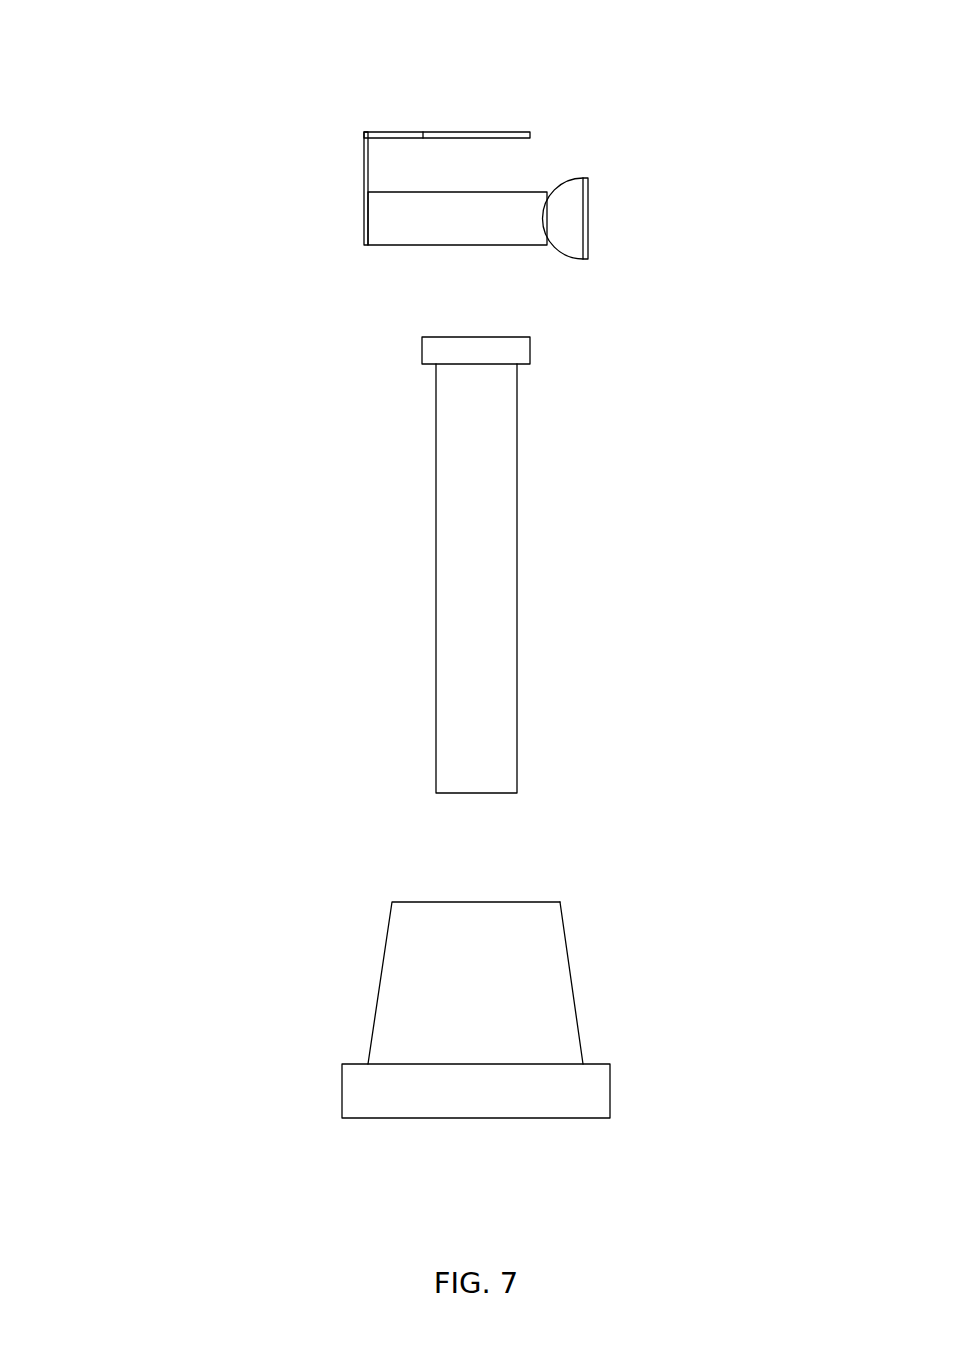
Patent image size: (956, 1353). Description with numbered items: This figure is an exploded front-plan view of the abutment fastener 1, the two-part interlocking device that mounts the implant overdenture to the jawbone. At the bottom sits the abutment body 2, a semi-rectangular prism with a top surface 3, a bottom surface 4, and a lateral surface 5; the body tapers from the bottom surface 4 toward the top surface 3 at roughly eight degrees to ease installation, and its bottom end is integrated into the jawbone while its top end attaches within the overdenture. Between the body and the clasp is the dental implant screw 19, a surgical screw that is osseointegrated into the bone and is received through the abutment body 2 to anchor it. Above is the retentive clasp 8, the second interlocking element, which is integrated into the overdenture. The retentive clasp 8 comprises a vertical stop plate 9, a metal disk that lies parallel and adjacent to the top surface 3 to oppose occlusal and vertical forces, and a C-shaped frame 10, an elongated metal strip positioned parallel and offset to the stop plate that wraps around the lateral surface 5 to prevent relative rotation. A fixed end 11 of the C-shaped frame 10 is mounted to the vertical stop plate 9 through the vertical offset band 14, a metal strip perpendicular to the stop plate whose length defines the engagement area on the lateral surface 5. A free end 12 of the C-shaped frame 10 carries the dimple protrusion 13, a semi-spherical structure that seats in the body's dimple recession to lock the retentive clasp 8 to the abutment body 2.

The abutment fastener 1 is at (368, 613).
The abutment body 2 is at (286, 944).
The top surface 3 is at (554, 892).
The bottom surface 4 is at (588, 1130).
The lateral surface 5 is at (573, 963).
The retentive clasp 8 is at (697, 102).
The vertical stop plate 9 is at (493, 135).
The C-shaped frame 10 is at (449, 237).
The fixed end 11 is at (355, 228).
The free end 12 is at (600, 221).
The dimple protrusion 13 is at (565, 246).
The vertical offset band 14 is at (365, 178).
The dental implant screw 19 is at (507, 655).